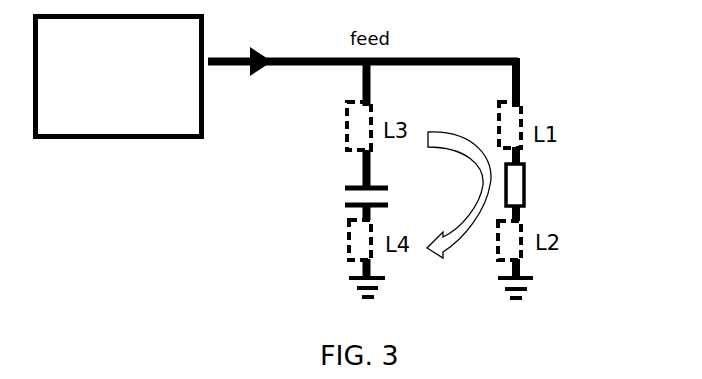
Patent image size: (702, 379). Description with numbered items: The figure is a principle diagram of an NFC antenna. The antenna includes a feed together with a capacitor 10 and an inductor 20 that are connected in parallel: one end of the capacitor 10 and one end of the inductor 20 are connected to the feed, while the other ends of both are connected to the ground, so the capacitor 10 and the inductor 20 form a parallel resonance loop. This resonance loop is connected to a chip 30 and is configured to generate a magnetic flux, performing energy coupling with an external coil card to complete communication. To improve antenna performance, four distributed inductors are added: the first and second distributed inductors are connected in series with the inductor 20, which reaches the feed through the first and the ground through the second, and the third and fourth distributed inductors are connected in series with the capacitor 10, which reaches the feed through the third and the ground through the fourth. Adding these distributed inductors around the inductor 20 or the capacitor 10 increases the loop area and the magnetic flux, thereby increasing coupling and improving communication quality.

The chip 30 is at (119, 77).
The capacitor 10 is at (341, 190).
The inductor 20 is at (514, 192).